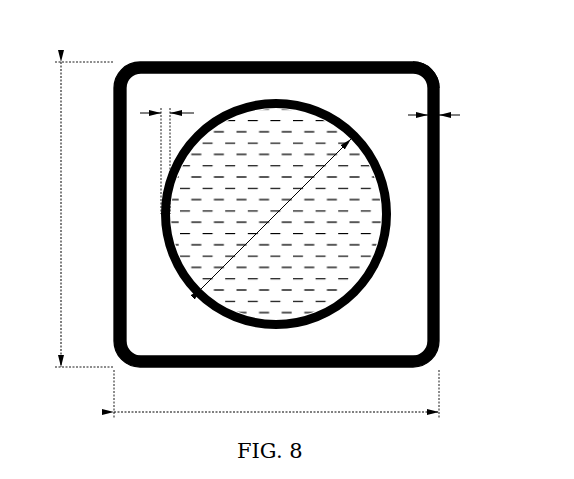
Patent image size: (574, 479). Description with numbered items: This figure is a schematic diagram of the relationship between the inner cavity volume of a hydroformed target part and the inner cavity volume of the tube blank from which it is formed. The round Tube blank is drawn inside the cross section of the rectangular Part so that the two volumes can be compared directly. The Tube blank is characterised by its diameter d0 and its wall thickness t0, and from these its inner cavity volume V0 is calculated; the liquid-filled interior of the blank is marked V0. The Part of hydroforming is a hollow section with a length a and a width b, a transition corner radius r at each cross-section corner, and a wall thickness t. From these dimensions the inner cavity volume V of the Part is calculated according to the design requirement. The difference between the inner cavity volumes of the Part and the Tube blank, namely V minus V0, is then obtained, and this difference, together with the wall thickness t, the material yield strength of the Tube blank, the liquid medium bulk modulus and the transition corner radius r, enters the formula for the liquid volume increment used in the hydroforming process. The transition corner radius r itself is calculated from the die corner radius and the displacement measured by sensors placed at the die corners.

The target part Part is at (439, 270).
The tube blank Tube blank is at (177, 277).
The inner cavity volume of the tube blank V0 is at (276, 214).
The diameter of the tube blank d0 is at (276, 214).
The wall thickness of the tube blank t0 is at (167, 144).
The wall thickness of the part t is at (443, 116).
The transition corner radius r is at (435, 65).
The inner cavity volume of the target part V is at (398, 320).
The width of the cross section of the target part b is at (73, 214).
The length of the cross section of the target part a is at (276, 392).